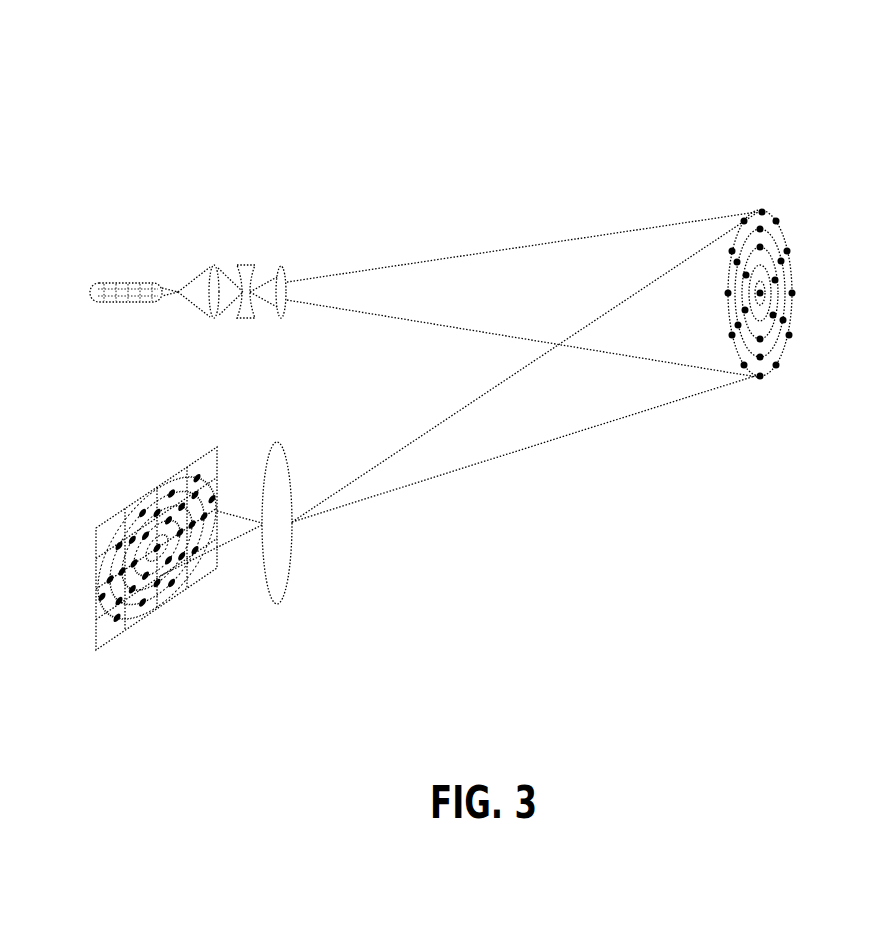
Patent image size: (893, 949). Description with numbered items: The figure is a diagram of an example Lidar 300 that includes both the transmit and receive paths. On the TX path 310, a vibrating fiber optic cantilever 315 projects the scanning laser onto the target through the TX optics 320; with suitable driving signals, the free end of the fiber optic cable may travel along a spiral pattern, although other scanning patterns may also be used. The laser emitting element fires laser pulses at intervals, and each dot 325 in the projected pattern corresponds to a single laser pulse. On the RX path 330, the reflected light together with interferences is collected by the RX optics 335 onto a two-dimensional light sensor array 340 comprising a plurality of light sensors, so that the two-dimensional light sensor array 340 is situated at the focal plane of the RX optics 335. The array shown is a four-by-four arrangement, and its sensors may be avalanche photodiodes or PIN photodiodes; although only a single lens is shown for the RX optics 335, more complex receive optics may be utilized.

The Lidar 300 is at (637, 56).
The TX path 310 is at (155, 240).
The vibrating fiber optic cantilever 315 is at (133, 282).
The TX optics 320 is at (263, 265).
The dot 325 is at (783, 250).
The RX path 330 is at (222, 580).
The RX optics 335 is at (272, 437).
The two-dimensional light sensor array 340 is at (133, 488).